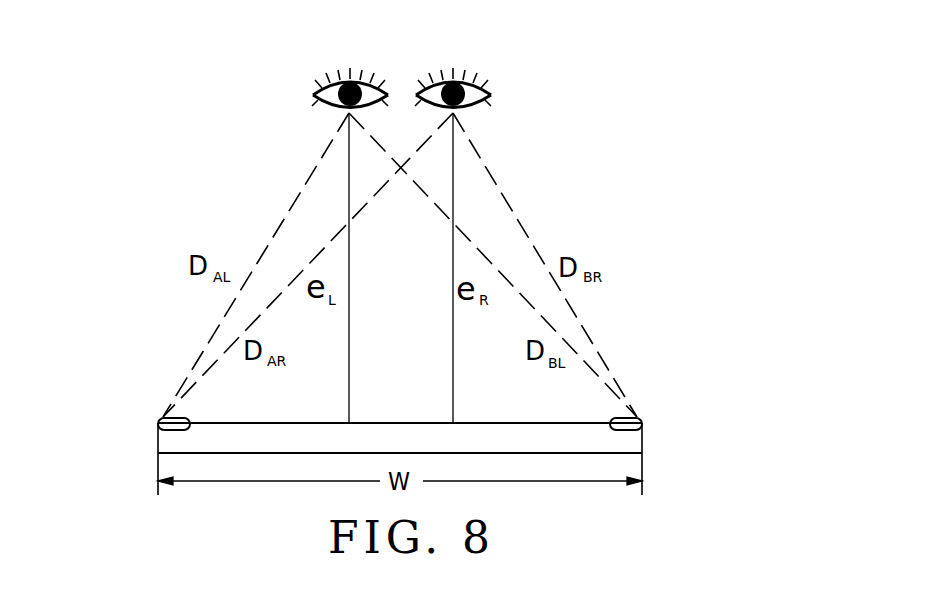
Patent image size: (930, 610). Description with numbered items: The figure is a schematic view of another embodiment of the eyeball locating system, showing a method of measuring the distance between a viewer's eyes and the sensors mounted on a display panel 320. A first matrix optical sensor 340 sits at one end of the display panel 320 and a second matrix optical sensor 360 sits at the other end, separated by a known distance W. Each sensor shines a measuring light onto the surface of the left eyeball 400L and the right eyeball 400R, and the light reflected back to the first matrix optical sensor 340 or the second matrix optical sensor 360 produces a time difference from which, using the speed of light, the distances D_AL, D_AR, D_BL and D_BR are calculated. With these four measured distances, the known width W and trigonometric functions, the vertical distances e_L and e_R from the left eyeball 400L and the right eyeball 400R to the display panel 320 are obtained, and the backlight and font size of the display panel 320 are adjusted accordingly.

The left eyeball 400L is at (330, 83).
The right eyeball 400R is at (475, 83).
The display panel 320 is at (632, 445).
The second matrix optical sensor 360 is at (158, 425).
The first matrix optical sensor 340 is at (626, 418).